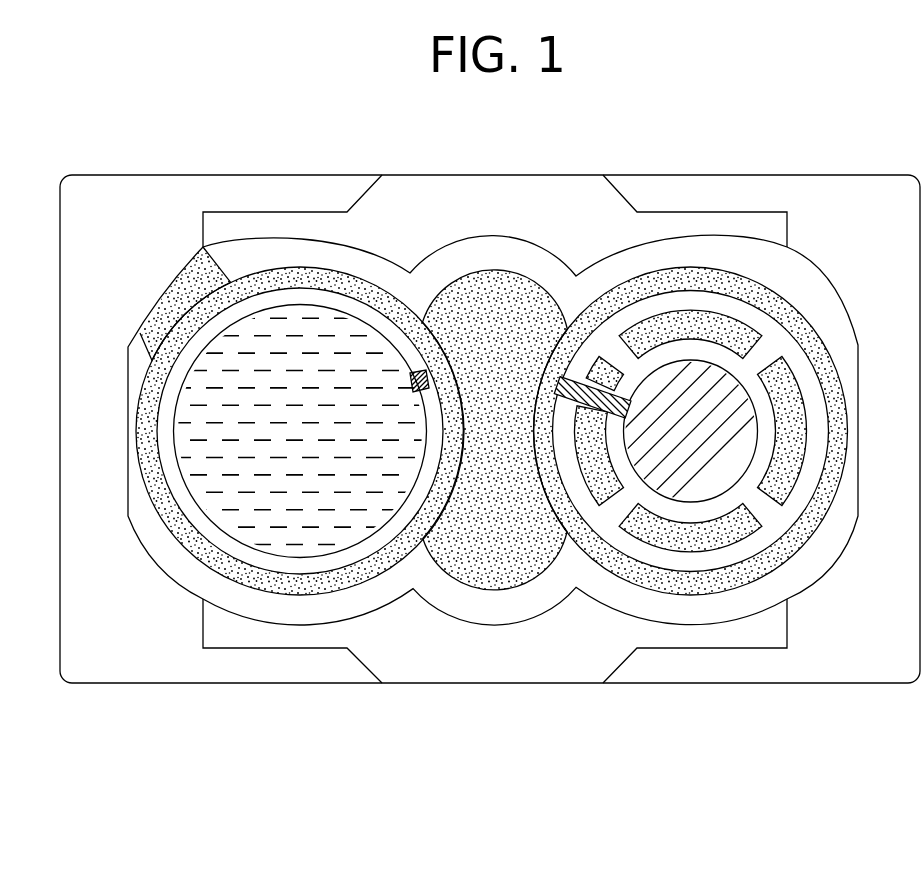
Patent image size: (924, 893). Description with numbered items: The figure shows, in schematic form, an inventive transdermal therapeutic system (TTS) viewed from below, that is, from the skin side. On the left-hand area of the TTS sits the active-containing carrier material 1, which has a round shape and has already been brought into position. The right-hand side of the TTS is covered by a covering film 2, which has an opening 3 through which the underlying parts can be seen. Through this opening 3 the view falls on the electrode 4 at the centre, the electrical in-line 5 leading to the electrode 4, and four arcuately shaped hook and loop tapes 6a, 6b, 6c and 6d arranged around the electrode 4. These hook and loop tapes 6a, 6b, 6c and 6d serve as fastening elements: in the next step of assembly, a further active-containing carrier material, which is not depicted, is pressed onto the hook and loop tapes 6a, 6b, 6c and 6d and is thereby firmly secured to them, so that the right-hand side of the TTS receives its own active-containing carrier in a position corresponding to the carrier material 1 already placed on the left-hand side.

The active-containing carrier material 1 is at (208, 411).
The covering film 2 is at (483, 297).
The opening 3 is at (822, 378).
The electrode 4 is at (717, 473).
The electrical in-line 5 is at (563, 381).
The hook and loop tape 6a is at (738, 333).
The hook and loop tape 6b is at (787, 437).
The hook and loop tape 6c is at (688, 528).
The hook and loop tape 6d is at (595, 482).